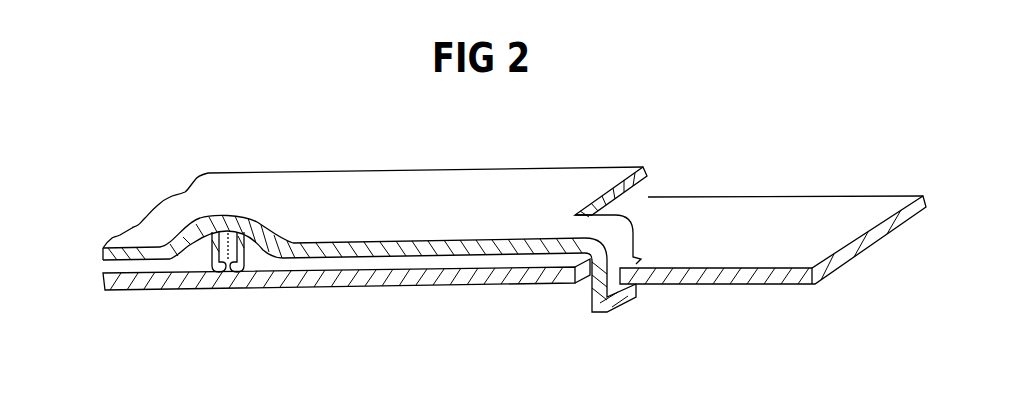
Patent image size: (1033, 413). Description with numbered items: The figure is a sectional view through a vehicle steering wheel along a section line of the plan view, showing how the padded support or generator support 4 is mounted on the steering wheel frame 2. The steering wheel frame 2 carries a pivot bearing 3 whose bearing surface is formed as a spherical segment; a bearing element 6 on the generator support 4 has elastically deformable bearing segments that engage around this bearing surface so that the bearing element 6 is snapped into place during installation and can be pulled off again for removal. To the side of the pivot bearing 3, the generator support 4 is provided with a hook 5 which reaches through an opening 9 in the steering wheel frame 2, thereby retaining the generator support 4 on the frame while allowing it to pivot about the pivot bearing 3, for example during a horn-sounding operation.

The steering wheel frame 2 is at (677, 285).
The pivot bearing 3 is at (232, 292).
The generator support 4 is at (445, 192).
The hook 5 is at (605, 303).
The bearing element 6 is at (236, 243).
The opening 9 is at (586, 286).